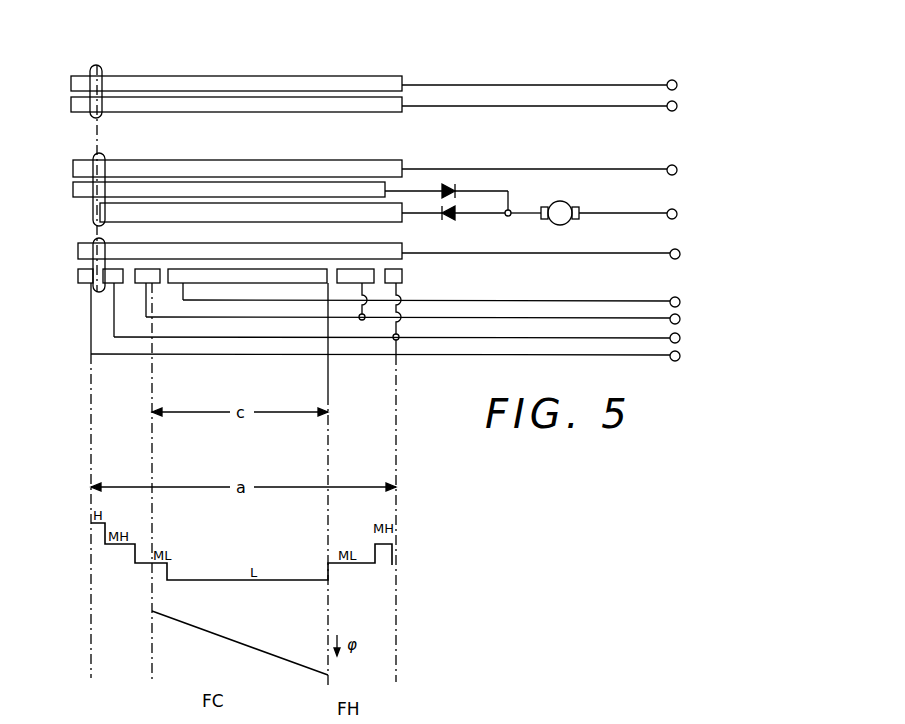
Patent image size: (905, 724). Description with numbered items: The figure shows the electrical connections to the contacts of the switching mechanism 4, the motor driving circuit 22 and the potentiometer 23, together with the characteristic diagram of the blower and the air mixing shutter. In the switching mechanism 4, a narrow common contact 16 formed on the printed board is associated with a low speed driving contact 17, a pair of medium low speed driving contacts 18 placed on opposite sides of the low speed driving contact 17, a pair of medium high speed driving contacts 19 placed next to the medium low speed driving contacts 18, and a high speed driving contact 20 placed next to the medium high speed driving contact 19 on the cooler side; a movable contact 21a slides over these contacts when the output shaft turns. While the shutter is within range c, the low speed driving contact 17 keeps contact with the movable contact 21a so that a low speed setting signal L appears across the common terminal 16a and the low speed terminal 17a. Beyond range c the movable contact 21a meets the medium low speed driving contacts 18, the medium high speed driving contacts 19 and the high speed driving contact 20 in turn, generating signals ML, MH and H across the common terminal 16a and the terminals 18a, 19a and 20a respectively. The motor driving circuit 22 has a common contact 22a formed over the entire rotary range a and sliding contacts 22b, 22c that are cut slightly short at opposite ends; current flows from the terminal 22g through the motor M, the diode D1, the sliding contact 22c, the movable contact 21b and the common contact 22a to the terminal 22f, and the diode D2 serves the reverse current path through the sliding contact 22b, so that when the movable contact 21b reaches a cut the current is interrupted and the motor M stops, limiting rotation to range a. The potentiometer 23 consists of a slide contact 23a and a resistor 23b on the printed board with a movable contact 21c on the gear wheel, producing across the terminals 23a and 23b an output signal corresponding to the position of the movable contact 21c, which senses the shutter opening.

The switching mechanism 4 is at (385, 335).
The common contact 16 is at (78, 251).
The common terminal 16a is at (563, 255).
The low speed driving contact 17 is at (181, 285).
The low speed terminal 17a is at (453, 303).
The medium low speed driving contacts 18 is at (140, 285).
The medium low speed terminal 18a is at (435, 320).
The medium high speed driving contacts 19 is at (112, 285).
The medium high speed terminal 19a is at (419, 339).
The high speed driving contact 20 is at (78, 286).
The high speed terminal 20a is at (407, 358).
The movable contact 21a is at (97, 240).
The movable contact 21b is at (96, 154).
The movable contact 21c is at (97, 64).
The motor driving circuit 22 is at (423, 185).
The common contact 22a is at (343, 166).
The sliding contact 22b is at (146, 183).
The sliding contact 22c is at (180, 212).
The terminal 22f is at (677, 166).
The terminal 22g is at (677, 212).
The potentiometer 23 is at (417, 66).
The slide contact 23a is at (323, 76).
The resistor 23b is at (172, 104).
The diode D1 is at (460, 220).
The diode D2 is at (454, 184).
The motor M is at (566, 208).